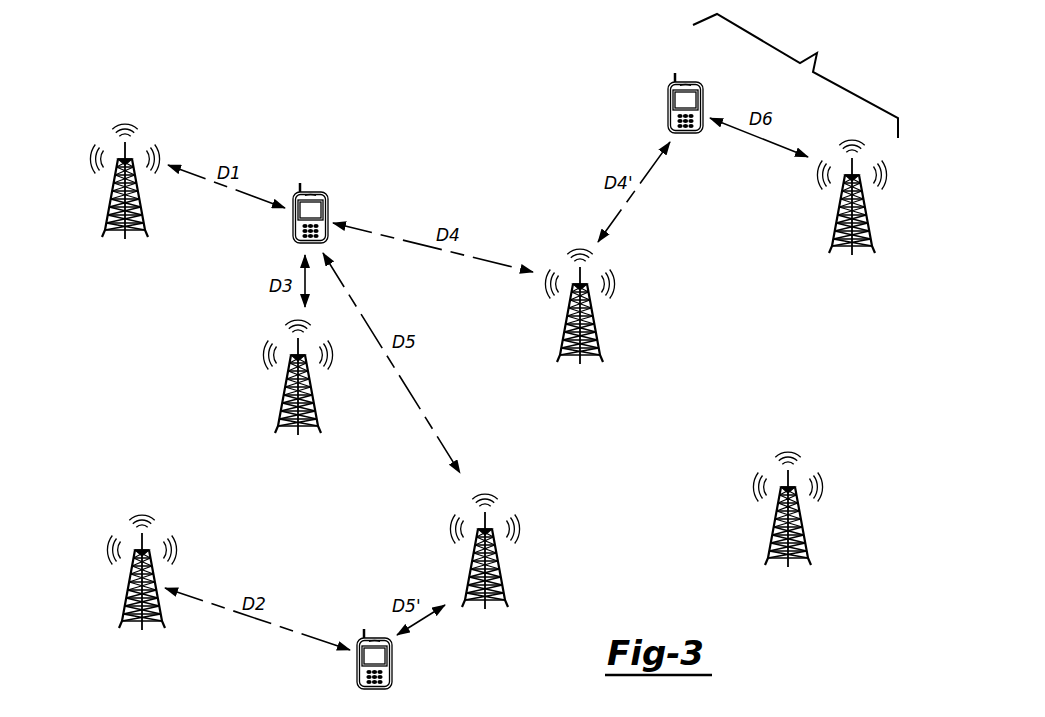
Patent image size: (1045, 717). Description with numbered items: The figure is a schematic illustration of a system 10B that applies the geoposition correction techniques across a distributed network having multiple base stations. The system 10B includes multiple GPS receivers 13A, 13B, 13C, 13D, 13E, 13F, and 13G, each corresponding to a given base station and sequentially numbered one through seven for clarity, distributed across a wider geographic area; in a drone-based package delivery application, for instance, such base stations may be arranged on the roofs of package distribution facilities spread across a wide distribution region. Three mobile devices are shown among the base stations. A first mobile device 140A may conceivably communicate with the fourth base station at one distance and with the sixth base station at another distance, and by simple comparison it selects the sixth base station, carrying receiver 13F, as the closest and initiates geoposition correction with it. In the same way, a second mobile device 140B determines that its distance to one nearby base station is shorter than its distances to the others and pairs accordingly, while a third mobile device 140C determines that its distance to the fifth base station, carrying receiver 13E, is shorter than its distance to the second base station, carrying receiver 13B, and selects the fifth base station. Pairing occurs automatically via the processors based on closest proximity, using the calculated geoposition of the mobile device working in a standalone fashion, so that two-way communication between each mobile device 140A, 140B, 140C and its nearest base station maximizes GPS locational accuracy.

The GPS receiver 13A is at (110, 200).
The GPS receiver 13B is at (126, 606).
The GPS receiver 13C is at (316, 410).
The GPS receiver 13D is at (598, 338).
The GPS receiver 13E is at (503, 583).
The GPS receiver 13F is at (870, 229).
The GPS receiver 13G is at (806, 541).
The first mobile device 140A is at (668, 100).
The second mobile device 140B is at (328, 208).
The third mobile device 140C is at (392, 660).
The system 10B is at (795, 76).